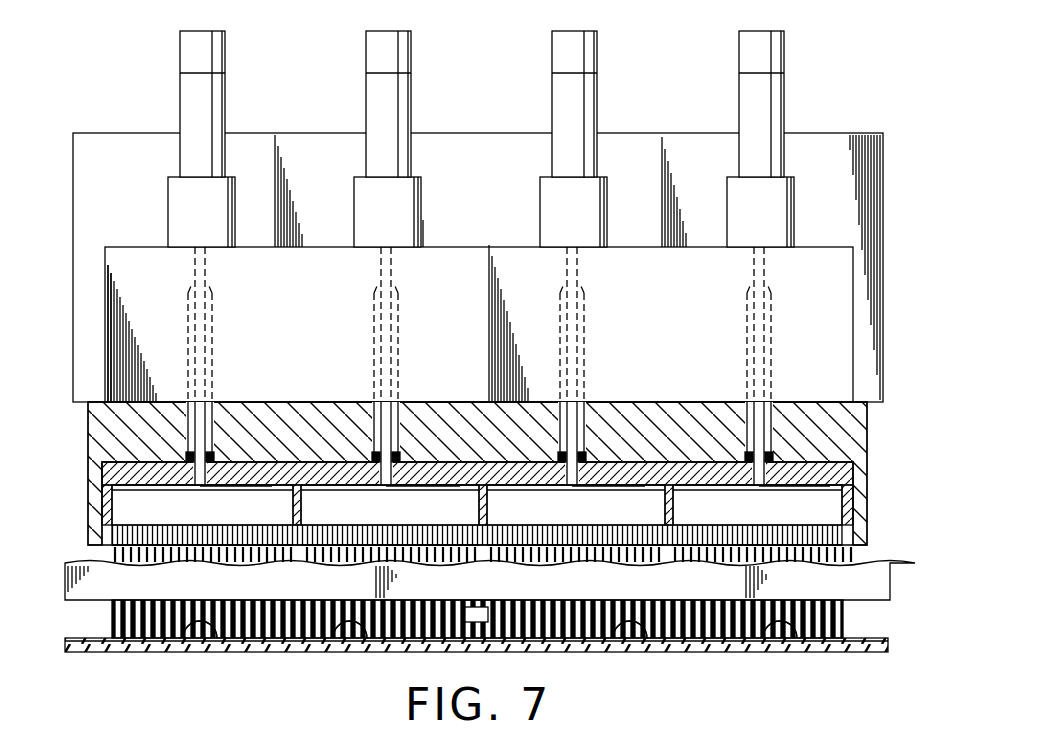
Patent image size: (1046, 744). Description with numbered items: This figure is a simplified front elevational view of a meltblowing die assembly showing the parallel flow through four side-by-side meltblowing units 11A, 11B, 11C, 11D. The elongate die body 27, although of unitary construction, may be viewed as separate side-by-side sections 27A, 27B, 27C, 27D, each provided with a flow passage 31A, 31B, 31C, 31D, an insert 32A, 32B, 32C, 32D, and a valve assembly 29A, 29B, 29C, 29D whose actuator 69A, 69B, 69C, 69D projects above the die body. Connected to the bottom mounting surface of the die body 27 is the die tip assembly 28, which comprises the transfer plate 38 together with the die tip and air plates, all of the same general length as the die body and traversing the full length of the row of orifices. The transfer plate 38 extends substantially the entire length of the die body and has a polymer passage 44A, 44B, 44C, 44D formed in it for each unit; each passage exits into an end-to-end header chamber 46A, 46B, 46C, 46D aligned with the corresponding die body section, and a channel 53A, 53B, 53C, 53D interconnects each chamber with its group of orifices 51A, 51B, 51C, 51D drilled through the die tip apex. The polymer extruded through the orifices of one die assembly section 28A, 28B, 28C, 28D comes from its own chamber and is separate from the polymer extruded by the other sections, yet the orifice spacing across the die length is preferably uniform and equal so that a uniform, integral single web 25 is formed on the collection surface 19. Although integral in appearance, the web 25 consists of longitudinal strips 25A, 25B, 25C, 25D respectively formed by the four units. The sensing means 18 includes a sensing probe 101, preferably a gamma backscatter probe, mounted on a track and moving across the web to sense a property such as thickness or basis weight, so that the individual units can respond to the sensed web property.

The die assembly unit 11A is at (155, 236).
The die assembly unit 11B is at (342, 232).
The die assembly unit 11C is at (531, 228).
The die assembly unit 11D is at (711, 141).
The actuator 69A is at (203, 80).
The actuator 69B is at (389, 80).
The actuator 69C is at (575, 88).
The actuator 69D is at (762, 83).
The valve assembly 29A is at (105, 247).
The valve assembly 29B is at (316, 284).
The valve assembly 29C is at (505, 290).
The valve assembly 29D is at (693, 270).
The die body 27 is at (792, 268).
The die body section 27A is at (140, 300).
The die body section 27B is at (338, 283).
The die body section 27C is at (527, 285).
The die body section 27D is at (723, 280).
The flow passage 31A is at (192, 318).
The flow passage 31B is at (383, 320).
The flow passage 31C is at (570, 322).
The flow passage 31D is at (750, 323).
The polymer passage 44A is at (189, 454).
The polymer passage 44B is at (375, 454).
The polymer passage 44C is at (560, 456).
The polymer passage 44D is at (748, 455).
The header chamber 46A is at (236, 488).
The header chamber 46B is at (427, 488).
The header chamber 46C is at (610, 488).
The header chamber 46D is at (792, 490).
The transfer plate 38 is at (130, 432).
The die tip assembly 28 is at (90, 500).
The channel 53A is at (157, 515).
The channel 53B is at (339, 515).
The channel 53C is at (524, 515).
The channel 53D is at (707, 515).
The insert 32A is at (236, 503).
The insert 32B is at (423, 503).
The insert 32C is at (608, 503).
The insert 32D is at (794, 506).
The die assembly section 28A is at (200, 547).
The die assembly section 28B is at (372, 548).
The die assembly section 28C is at (548, 548).
The die assembly section 28D is at (738, 548).
The orifices 51A is at (265, 562).
The orifices 51B is at (452, 562).
The orifices 51C is at (630, 562).
The orifices 51D is at (857, 562).
The sensing means 18 is at (171, 601).
The collection surface 19 is at (273, 654).
The nonwoven web 25 is at (121, 628).
The longitudinal strip 25A is at (220, 652).
The longitudinal strip 25B is at (364, 640).
The longitudinal strip 25C is at (648, 645).
The longitudinal strip 25D is at (803, 652).
The sensing probe 101 is at (482, 618).